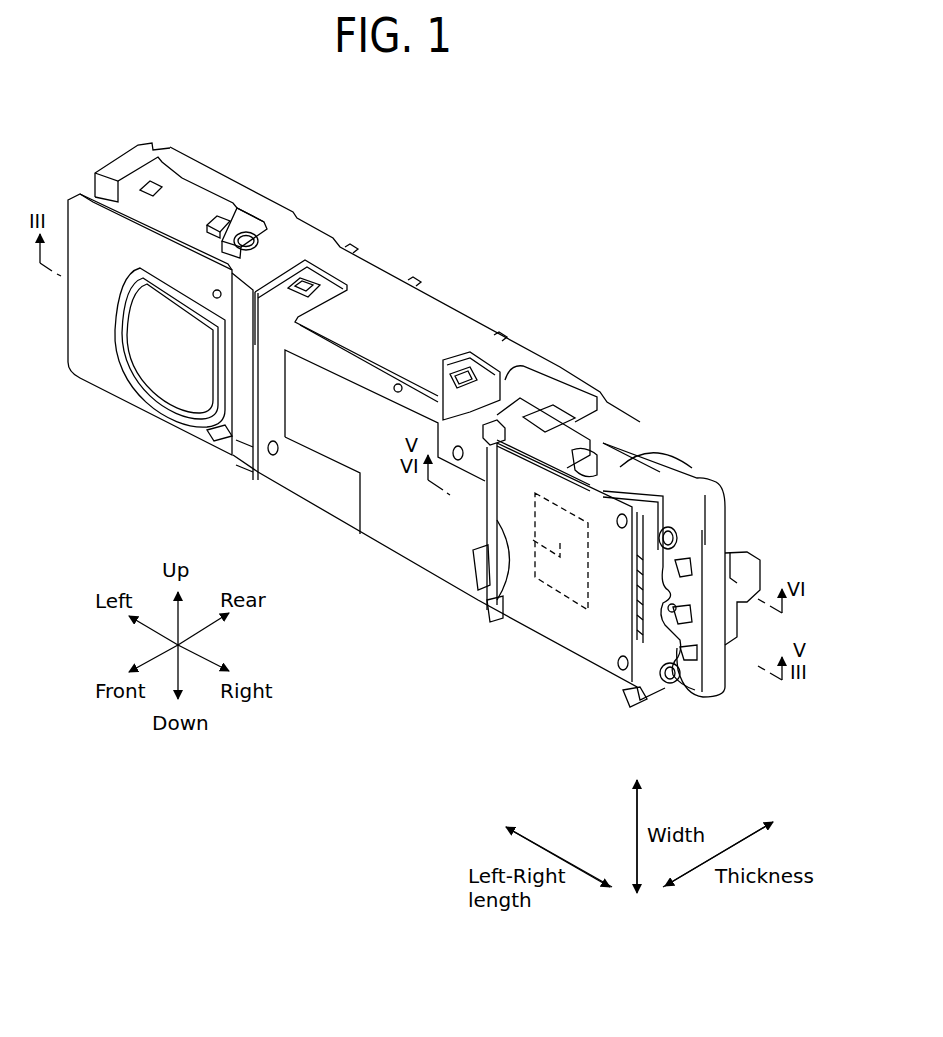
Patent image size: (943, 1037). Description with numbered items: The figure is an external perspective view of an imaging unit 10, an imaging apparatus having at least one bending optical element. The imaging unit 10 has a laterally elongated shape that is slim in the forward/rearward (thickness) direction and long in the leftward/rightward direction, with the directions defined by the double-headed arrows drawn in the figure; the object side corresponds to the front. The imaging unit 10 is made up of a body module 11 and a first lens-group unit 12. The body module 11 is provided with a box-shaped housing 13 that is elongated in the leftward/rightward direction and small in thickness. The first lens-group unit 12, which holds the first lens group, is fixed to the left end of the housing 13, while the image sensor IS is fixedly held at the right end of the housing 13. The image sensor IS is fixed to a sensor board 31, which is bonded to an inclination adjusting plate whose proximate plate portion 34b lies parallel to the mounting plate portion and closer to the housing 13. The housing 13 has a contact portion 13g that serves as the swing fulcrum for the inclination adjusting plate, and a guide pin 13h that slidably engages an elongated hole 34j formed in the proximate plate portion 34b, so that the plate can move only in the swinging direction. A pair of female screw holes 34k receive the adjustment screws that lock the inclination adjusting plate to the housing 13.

The imaging unit 10 is at (505, 195).
The body module 11 is at (630, 340).
The first lens-group unit 12 is at (127, 134).
The housing 13 is at (734, 496).
The contact portion 13g is at (515, 545).
The guide pin 13h is at (702, 640).
The sensor board 31 is at (605, 626).
The proximate plate portion 34b is at (661, 512).
The female screw holes 34k is at (669, 528).
The elongated hole 34j is at (662, 572).
The image sensor IS is at (545, 585).